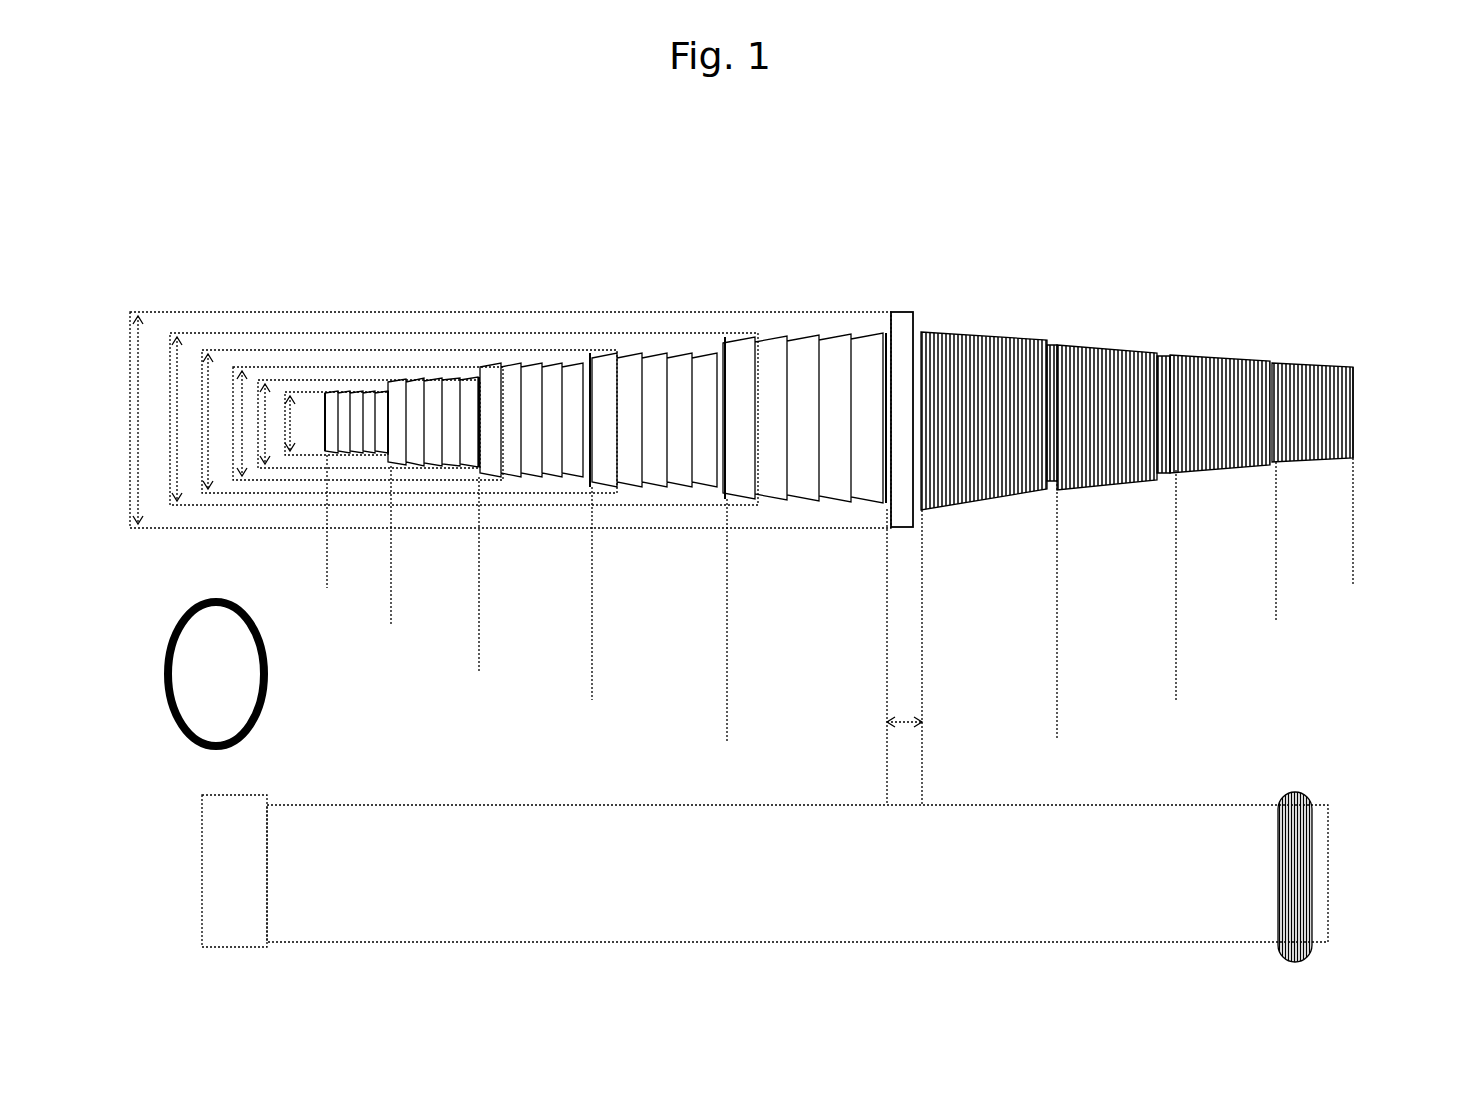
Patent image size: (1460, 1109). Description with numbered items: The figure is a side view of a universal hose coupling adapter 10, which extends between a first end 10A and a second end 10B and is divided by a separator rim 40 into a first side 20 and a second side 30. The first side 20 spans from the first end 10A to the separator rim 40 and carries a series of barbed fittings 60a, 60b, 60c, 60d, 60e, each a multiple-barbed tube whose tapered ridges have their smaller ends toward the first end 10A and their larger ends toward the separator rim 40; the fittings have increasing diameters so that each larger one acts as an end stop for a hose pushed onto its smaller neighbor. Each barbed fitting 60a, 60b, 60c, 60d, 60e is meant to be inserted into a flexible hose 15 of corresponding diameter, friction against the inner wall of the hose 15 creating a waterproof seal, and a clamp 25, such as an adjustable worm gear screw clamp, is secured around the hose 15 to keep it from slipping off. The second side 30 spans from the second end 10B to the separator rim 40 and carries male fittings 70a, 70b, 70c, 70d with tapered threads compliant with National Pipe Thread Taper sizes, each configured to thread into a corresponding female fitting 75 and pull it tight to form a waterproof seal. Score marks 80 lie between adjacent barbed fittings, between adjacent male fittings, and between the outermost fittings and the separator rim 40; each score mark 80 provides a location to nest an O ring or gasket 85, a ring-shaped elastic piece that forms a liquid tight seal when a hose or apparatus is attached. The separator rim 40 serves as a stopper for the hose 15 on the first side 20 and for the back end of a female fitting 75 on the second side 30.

The universal hose coupling adapter 10 is at (1355, 295).
The first end 10A is at (318, 419).
The second end 10B is at (1362, 414).
The flexible hose 15 is at (797, 873).
The first side 20 is at (883, 305).
The clamp 25 is at (1297, 826).
The second side 30 is at (1355, 313).
The separator rim 40 is at (903, 308).
The barbed fitting 60a is at (327, 578).
The barbed fitting 60b is at (391, 598).
The barbed fitting 60c is at (479, 623).
The barbed fitting 60d is at (592, 645).
The barbed fitting 60e is at (887, 675).
The male fitting 70a is at (1353, 577).
The male fitting 70b is at (1276, 577).
The male fitting 70c is at (1057, 577).
The male fitting 70d is at (922, 577).
The female fitting 75 is at (212, 845).
The score mark 80 is at (388, 392).
The O ring or gasket 85 is at (267, 672).